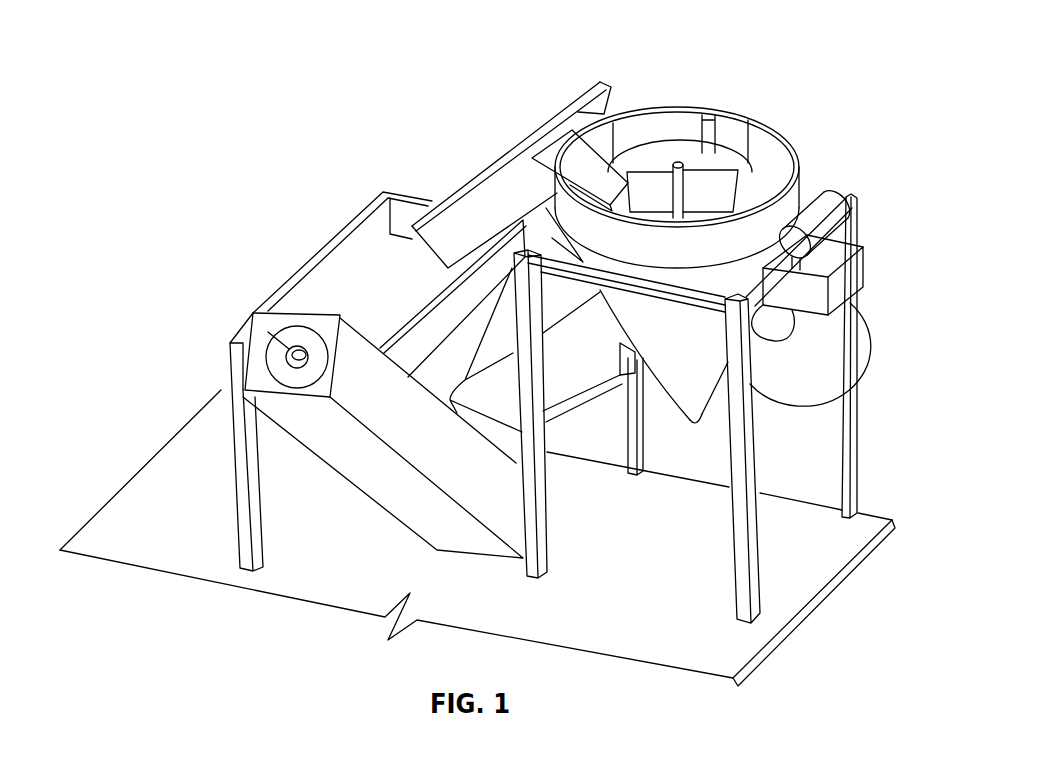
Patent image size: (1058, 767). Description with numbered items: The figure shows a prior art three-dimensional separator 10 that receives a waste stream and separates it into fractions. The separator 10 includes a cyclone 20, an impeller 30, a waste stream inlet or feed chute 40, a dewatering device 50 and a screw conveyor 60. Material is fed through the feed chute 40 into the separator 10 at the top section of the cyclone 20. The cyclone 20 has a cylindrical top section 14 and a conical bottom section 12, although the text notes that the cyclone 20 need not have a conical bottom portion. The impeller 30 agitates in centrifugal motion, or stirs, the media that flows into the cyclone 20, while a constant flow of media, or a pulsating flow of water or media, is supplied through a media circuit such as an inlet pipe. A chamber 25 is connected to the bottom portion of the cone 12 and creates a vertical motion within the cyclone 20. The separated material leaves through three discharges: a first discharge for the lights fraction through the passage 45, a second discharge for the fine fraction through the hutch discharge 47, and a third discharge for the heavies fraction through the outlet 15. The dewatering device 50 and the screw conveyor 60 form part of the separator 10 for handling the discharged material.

The separator 10 is at (828, 72).
The conical bottom section 12 is at (677, 353).
The cylindrical top section 14 is at (778, 208).
The outlet 15 is at (697, 403).
The cyclone 20 is at (718, 113).
The chamber 25 is at (858, 323).
The impeller 30 is at (662, 183).
The feed chute 40 is at (563, 155).
The passage 45 is at (462, 208).
The hutch discharge 47 is at (583, 373).
The dewatering device 50 is at (340, 307).
The screw conveyor 60 is at (388, 437).